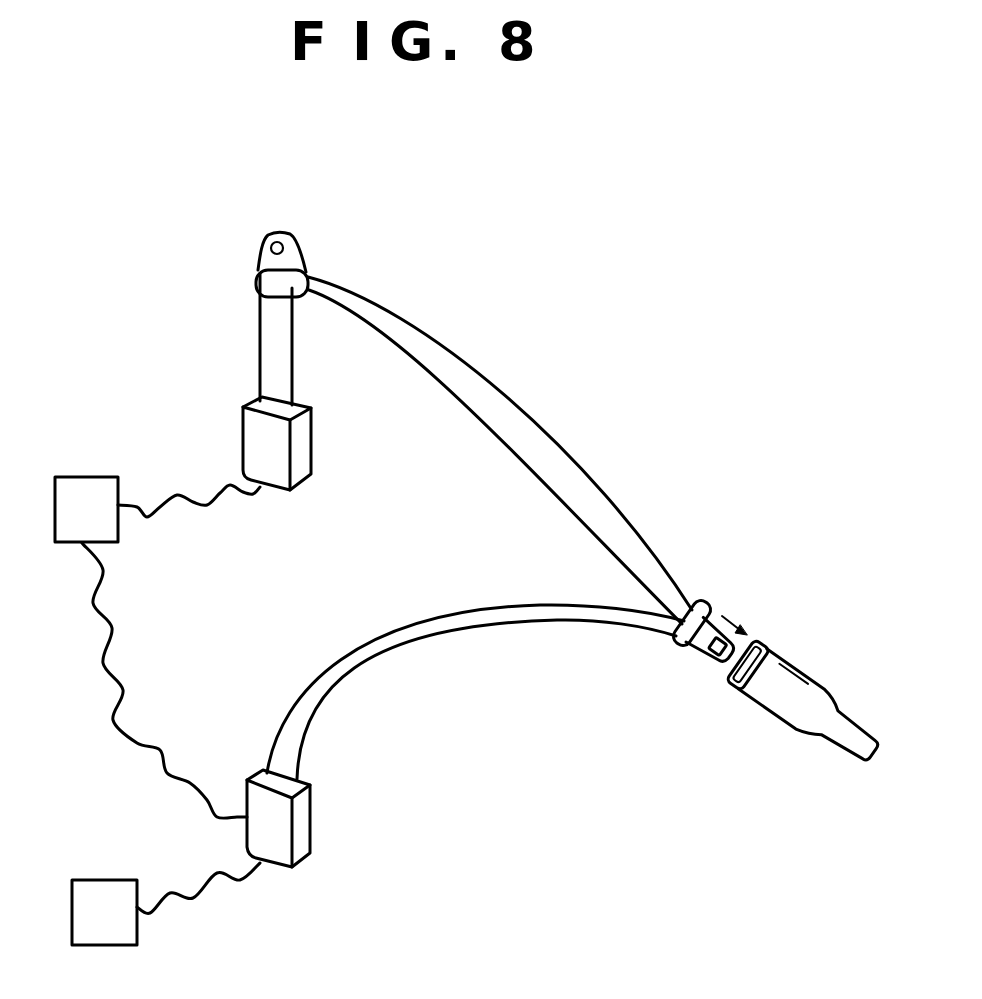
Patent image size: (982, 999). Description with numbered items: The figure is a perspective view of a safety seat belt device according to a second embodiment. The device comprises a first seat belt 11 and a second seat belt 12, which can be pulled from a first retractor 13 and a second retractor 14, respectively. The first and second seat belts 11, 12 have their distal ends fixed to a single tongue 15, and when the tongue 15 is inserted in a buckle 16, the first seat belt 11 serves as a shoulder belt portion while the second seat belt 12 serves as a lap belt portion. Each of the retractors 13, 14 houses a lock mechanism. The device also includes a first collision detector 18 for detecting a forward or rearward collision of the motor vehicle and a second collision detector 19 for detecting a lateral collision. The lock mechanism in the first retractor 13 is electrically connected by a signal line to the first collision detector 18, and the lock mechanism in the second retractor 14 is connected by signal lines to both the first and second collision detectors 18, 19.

The first seat belt 11 is at (530, 430).
The second seat belt 12 is at (463, 635).
The first retractor 13 is at (305, 450).
The second retractor 14 is at (303, 838).
The tongue 15 is at (713, 608).
The buckle 16 is at (802, 690).
The first collision detector 18 is at (90, 477).
The second collision detector 19 is at (136, 933).